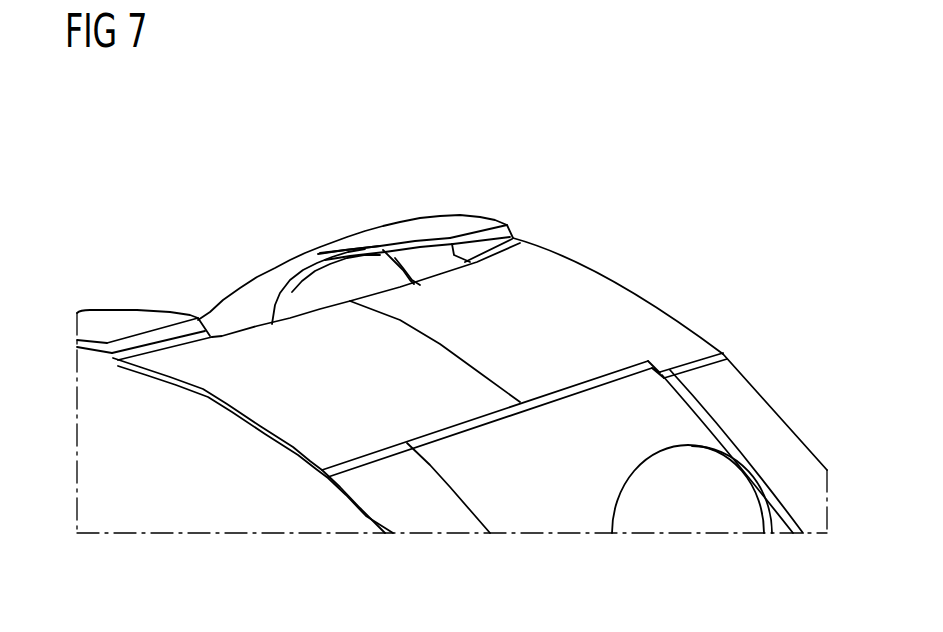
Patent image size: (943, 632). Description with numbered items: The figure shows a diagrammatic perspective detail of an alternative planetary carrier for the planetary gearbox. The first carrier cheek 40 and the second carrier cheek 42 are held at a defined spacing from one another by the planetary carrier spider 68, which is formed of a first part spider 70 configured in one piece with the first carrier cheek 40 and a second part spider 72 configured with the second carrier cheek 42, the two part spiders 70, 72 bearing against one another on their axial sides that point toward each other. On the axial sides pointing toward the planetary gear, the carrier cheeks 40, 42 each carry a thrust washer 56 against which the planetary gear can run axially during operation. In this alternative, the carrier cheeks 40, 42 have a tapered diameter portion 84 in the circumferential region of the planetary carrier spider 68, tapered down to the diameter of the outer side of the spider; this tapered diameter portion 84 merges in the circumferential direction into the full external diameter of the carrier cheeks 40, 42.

The first carrier cheek 40 is at (651, 194).
The second carrier cheek 42 is at (757, 402).
The thrust washer 56 is at (272, 320).
The planetary carrier spider 68 is at (455, 132).
The first part spider 70 is at (315, 340).
The second part spider 72 is at (423, 317).
The tapered diameter portion 84 is at (223, 374).